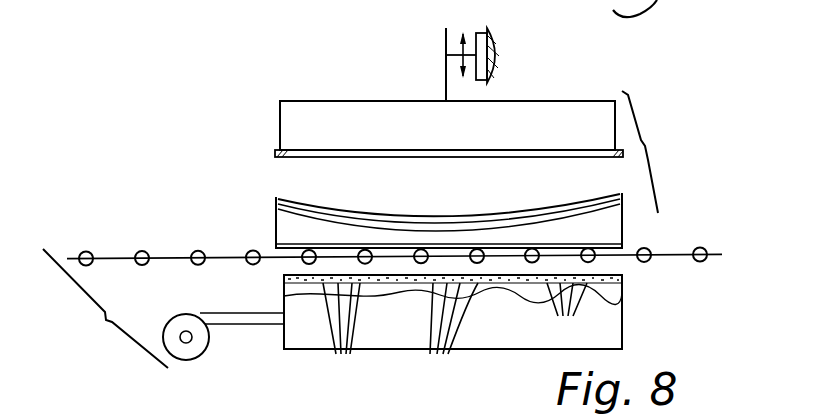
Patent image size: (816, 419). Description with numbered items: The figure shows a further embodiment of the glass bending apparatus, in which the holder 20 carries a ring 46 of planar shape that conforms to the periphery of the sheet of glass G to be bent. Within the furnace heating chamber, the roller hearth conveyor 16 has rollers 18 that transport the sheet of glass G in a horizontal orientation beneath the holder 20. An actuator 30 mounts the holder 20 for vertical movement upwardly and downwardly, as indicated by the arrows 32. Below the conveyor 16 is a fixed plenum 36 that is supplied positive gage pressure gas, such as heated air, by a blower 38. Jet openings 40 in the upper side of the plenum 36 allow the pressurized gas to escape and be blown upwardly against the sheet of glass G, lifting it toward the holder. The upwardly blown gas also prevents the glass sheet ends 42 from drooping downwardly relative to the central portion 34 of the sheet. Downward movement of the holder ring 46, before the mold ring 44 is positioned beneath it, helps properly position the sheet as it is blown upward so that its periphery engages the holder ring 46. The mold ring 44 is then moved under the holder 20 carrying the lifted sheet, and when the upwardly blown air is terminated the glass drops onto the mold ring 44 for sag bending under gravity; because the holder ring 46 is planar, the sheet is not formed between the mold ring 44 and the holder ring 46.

The roller hearth conveyor 16 is at (394, 223).
The rollers 18 is at (196, 251).
The holder 20 is at (327, 100).
The actuator 30 is at (500, 50).
The arrows 32 is at (465, 30).
The central portion 34 is at (415, 204).
The fixed plenum 36 is at (604, 310).
The blower 38 is at (178, 318).
The jet openings 40 is at (455, 336).
The glass sheet ends 42 is at (278, 197).
The mold ring 44 is at (622, 212).
The ring 46 is at (275, 151).
The sheet of glass G is at (386, 215).